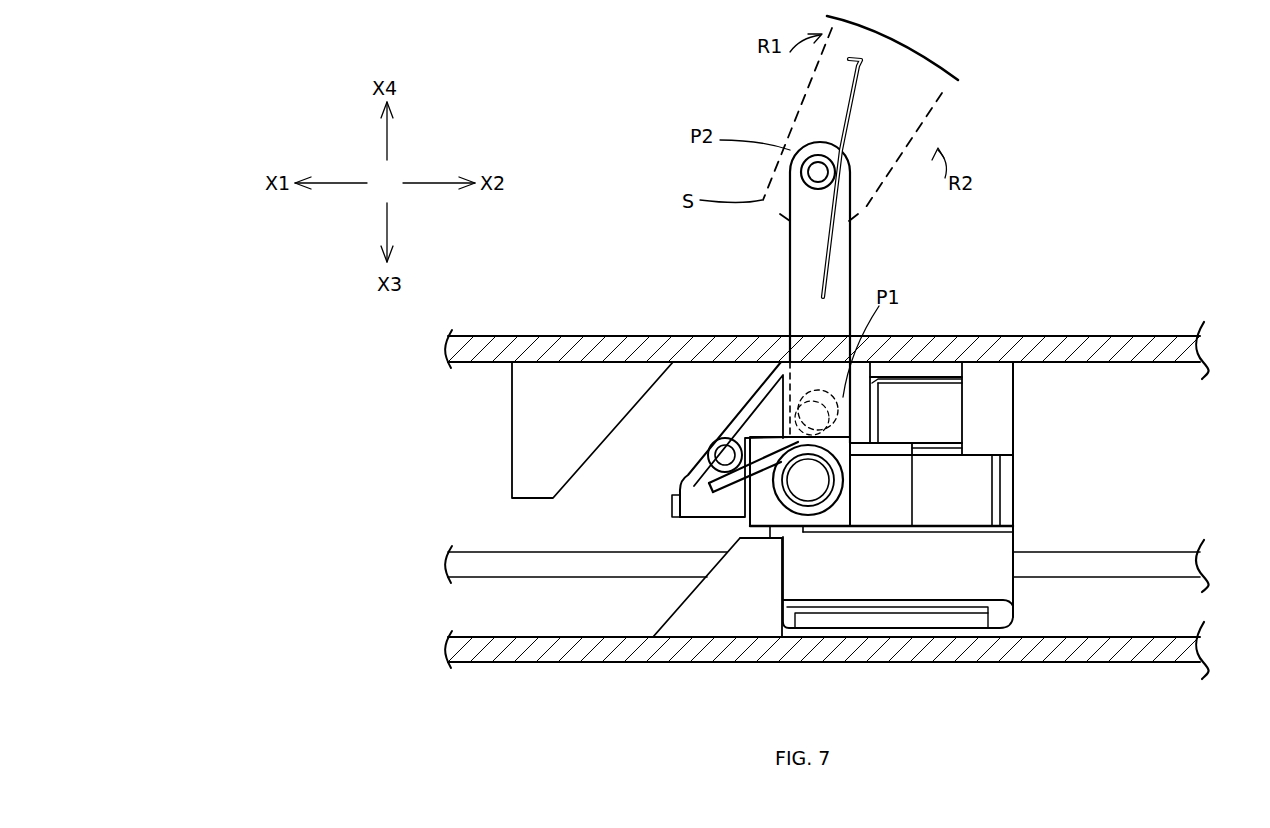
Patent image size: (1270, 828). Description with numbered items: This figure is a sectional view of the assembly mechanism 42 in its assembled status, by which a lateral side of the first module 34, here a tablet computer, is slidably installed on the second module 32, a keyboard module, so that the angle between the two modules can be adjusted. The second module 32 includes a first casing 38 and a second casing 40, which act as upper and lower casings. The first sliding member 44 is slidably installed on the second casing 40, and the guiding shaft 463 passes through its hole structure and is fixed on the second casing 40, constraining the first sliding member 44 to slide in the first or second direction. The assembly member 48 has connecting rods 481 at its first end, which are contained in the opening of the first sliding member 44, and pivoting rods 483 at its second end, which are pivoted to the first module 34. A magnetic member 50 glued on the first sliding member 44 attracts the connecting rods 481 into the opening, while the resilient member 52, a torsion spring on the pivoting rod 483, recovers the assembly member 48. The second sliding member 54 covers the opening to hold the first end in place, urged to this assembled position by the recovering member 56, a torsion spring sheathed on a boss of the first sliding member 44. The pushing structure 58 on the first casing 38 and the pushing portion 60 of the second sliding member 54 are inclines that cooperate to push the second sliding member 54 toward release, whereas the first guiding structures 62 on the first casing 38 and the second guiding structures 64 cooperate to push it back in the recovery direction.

The second module 32 is at (1199, 286).
The first module 34 is at (910, 80).
The first casing 38 is at (1155, 335).
The second casing 40 is at (1165, 663).
The assembly mechanism 42 is at (621, 129).
The first sliding member 44 is at (1049, 431).
The assembly member 48 is at (853, 260).
The magnetic member 50 is at (940, 395).
The resilient member 52 is at (863, 118).
The second sliding member 54 is at (647, 473).
The recovering member 56 is at (830, 498).
The pushing structure 58 is at (572, 368).
The pushing portion 60 is at (696, 483).
The first guiding structure 62 is at (712, 617).
The second guiding structure 64 is at (782, 528).
The guiding shaft 463 is at (1165, 551).
The connecting rod 481 is at (805, 400).
The pivoting rod 483 is at (812, 163).